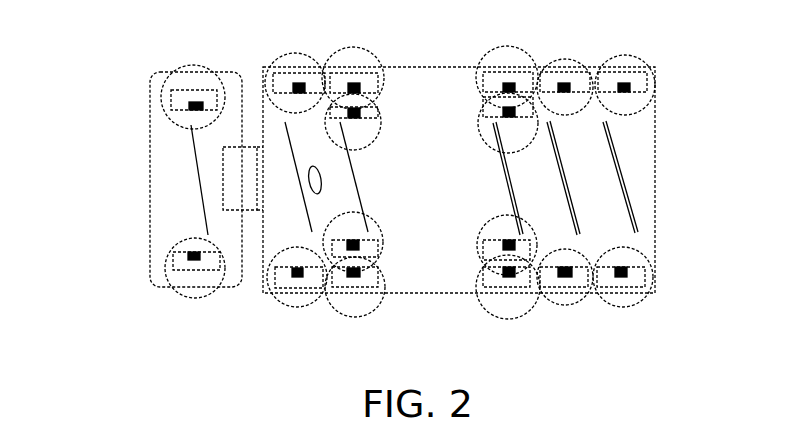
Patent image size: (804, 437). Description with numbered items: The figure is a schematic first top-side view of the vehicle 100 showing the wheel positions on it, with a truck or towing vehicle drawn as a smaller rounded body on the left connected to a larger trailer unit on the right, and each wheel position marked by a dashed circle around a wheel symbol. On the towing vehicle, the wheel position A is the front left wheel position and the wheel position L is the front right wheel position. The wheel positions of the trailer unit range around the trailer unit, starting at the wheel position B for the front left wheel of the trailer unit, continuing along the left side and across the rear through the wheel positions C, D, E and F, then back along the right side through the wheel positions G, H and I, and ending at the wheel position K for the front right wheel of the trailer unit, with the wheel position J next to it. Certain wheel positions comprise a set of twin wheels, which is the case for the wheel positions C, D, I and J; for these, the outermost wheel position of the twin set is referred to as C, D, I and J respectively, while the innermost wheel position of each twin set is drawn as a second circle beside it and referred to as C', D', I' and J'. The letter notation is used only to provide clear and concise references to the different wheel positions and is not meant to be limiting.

The vehicle 100 is at (128, 62).
The wheel position L is at (200, 62).
The wheel position K is at (297, 53).
The wheel position J is at (353, 54).
The wheel position J' is at (373, 111).
The wheel position I is at (507, 54).
The wheel position I' is at (482, 123).
The wheel position H is at (568, 57).
The wheel position G is at (632, 55).
The wheel position A is at (193, 298).
The wheel position B is at (295, 307).
The wheel position C is at (354, 312).
The wheel position C' is at (380, 242).
The wheel position D is at (506, 311).
The wheel position D' is at (488, 249).
The wheel position E is at (565, 308).
The wheel position F is at (622, 310).